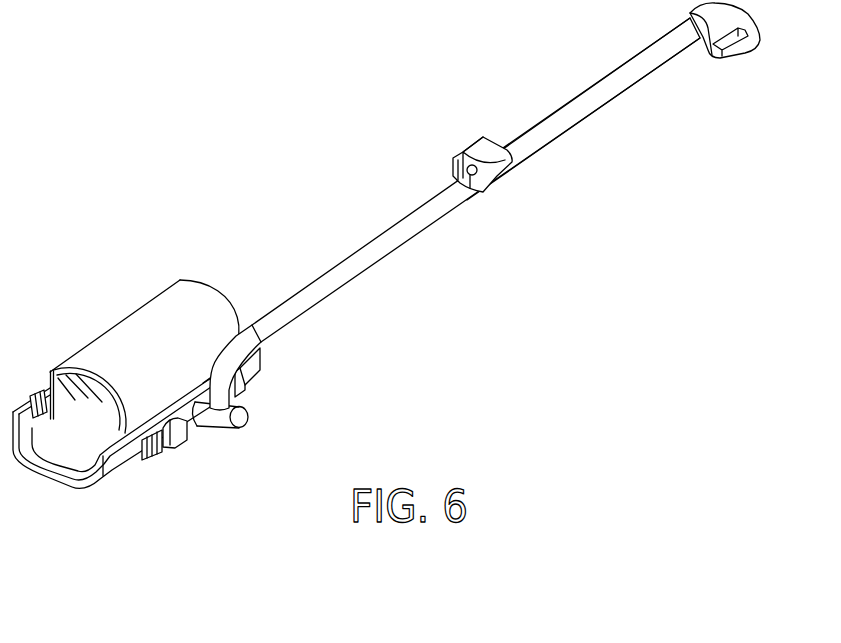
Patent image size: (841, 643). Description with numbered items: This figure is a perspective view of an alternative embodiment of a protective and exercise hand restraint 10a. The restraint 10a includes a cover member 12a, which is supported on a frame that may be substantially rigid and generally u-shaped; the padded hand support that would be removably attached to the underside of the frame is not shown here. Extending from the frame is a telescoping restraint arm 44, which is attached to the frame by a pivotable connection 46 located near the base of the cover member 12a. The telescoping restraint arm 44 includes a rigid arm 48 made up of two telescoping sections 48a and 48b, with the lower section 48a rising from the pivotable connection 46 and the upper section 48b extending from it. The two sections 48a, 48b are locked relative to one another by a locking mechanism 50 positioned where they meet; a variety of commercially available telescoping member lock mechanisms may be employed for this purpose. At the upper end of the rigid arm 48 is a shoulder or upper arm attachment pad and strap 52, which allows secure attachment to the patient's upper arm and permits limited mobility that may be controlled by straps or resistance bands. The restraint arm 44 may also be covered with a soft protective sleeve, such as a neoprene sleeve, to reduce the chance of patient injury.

The restraint 10a is at (145, 117).
The cover member 12a is at (103, 350).
The telescoping restraint arm 44 is at (455, 214).
The pivotable connection 46 is at (213, 422).
The rigid arm 48 is at (455, 214).
The telescoping section 48a is at (362, 248).
The telescoping section 48b is at (577, 97).
The locking mechanism 50 is at (463, 157).
The shoulder or upper arm attachment pad and strap 52 is at (723, 60).